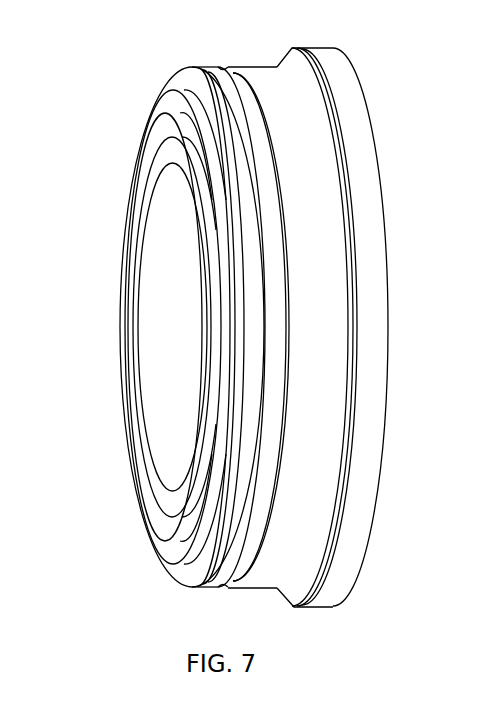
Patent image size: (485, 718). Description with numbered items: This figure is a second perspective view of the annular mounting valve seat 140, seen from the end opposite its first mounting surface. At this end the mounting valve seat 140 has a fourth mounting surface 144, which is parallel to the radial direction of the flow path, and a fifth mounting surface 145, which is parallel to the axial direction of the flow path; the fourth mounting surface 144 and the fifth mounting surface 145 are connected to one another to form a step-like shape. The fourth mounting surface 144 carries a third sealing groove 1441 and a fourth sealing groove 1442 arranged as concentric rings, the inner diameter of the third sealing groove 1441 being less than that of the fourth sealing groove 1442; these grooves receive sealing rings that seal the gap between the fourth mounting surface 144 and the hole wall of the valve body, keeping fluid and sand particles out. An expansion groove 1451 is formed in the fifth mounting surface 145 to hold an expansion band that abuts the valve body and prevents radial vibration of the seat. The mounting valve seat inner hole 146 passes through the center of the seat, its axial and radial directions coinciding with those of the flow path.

The mounting valve seat 140 is at (431, 85).
The fourth mounting surface 144 is at (148, 113).
The third sealing groove 1441 is at (178, 525).
The fourth sealing groove 1442 is at (181, 576).
The fifth mounting surface 145 is at (275, 88).
The expansion groove 1451 is at (280, 326).
The mounting valve seat inner hole 146 is at (200, 340).